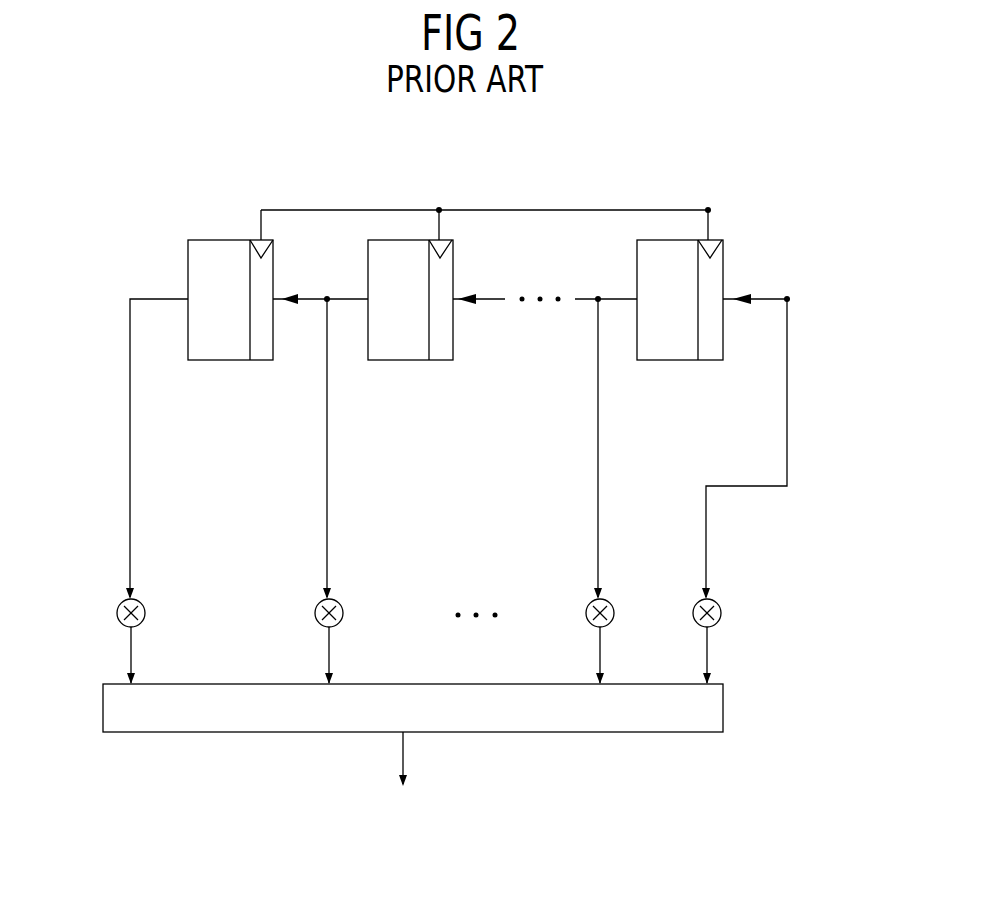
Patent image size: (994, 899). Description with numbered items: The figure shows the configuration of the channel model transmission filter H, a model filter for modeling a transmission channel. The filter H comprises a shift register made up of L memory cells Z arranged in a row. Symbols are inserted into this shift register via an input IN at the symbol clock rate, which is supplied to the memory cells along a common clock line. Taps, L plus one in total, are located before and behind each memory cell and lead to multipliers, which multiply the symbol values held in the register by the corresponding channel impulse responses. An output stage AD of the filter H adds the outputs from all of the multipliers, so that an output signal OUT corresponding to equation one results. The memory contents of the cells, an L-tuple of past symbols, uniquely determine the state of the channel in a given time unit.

The channel model transmission filter H is at (542, 176).
The output stage AD is at (693, 717).
The input IN is at (822, 299).
The output signal OUT is at (405, 781).